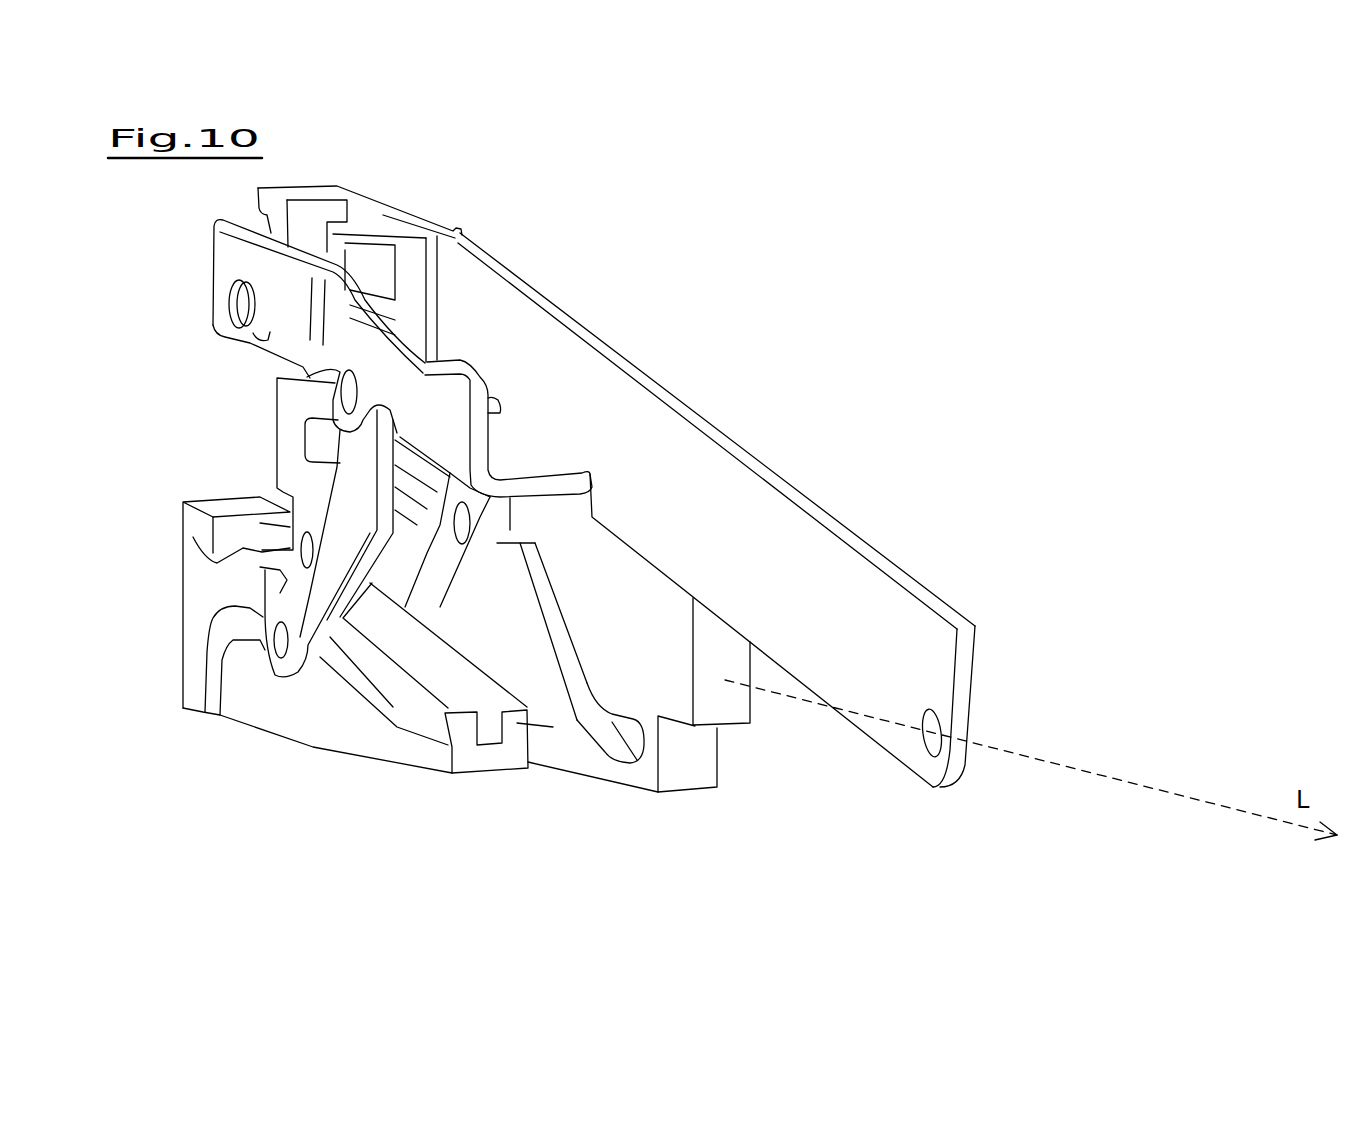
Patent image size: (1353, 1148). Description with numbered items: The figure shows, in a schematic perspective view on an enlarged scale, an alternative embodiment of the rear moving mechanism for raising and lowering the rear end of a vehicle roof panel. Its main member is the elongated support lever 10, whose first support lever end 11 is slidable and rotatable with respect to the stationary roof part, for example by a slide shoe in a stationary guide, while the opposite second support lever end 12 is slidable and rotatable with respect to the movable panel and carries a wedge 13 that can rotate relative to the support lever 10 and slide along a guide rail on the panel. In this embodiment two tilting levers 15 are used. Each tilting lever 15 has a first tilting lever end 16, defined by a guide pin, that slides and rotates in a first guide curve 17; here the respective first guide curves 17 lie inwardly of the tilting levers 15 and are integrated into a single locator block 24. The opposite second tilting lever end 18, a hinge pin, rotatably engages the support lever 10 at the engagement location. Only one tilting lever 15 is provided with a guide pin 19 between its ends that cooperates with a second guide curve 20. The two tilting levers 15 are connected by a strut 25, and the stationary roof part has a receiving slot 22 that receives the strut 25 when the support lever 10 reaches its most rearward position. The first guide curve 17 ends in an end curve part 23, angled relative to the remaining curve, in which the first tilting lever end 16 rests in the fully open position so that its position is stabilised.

The support lever 10 is at (757, 493).
The first support lever end 11 is at (942, 733).
The second support lever end 12 is at (235, 303).
The wedge 13 is at (313, 192).
The tilting lever 15 is at (467, 577).
The first tilting lever end 16 is at (327, 647).
The first guide curve 17 is at (435, 725).
The second tilting lever end 18 is at (290, 397).
The guide pin 19 is at (515, 535).
The second guide curve 20 is at (630, 728).
The receiving slot 22 is at (202, 555).
The end curve part 23 is at (213, 687).
The locator block 24 is at (482, 755).
The strut 25 is at (403, 553).